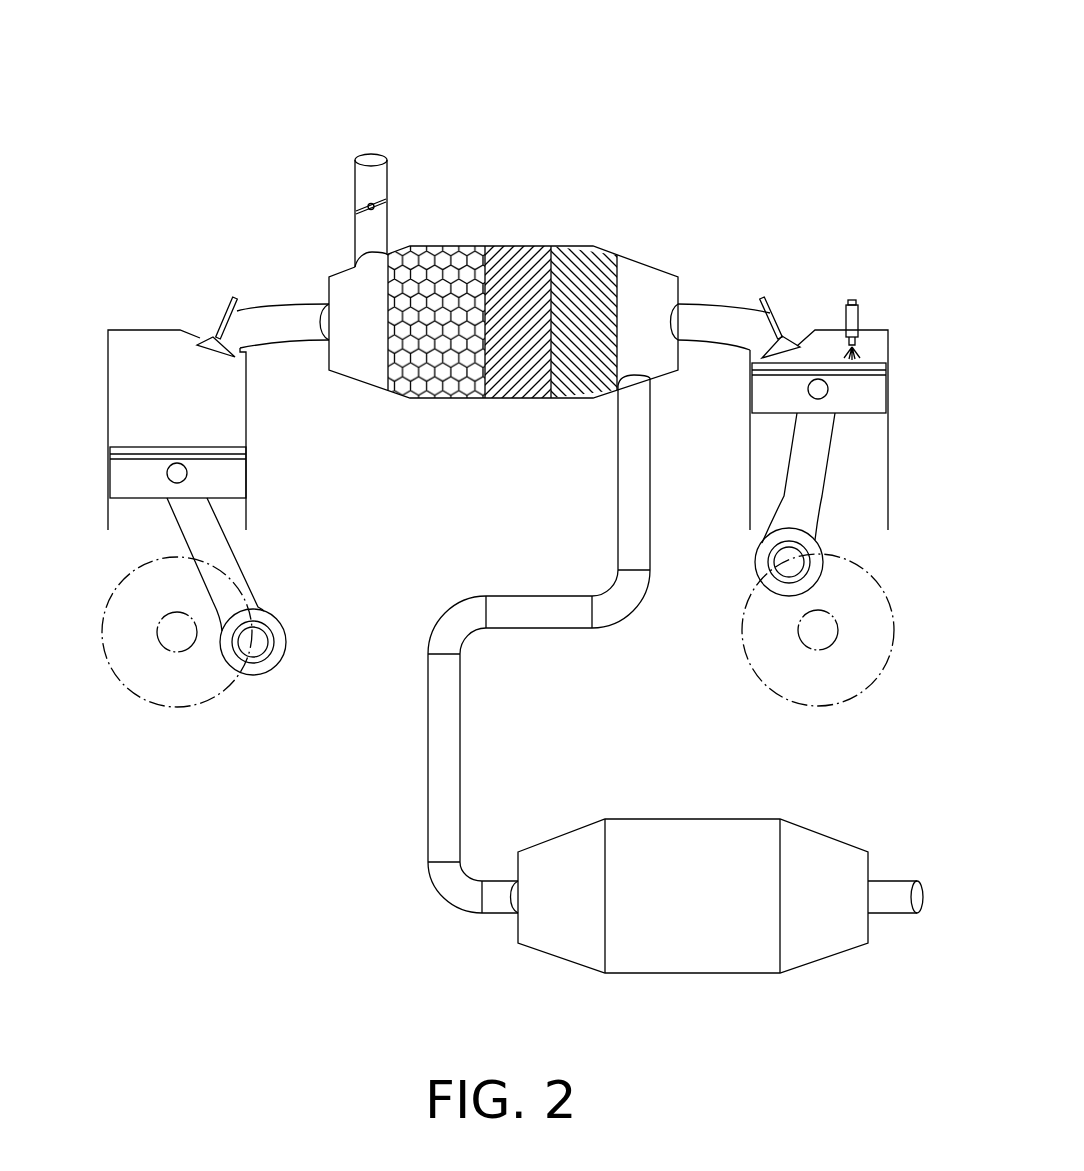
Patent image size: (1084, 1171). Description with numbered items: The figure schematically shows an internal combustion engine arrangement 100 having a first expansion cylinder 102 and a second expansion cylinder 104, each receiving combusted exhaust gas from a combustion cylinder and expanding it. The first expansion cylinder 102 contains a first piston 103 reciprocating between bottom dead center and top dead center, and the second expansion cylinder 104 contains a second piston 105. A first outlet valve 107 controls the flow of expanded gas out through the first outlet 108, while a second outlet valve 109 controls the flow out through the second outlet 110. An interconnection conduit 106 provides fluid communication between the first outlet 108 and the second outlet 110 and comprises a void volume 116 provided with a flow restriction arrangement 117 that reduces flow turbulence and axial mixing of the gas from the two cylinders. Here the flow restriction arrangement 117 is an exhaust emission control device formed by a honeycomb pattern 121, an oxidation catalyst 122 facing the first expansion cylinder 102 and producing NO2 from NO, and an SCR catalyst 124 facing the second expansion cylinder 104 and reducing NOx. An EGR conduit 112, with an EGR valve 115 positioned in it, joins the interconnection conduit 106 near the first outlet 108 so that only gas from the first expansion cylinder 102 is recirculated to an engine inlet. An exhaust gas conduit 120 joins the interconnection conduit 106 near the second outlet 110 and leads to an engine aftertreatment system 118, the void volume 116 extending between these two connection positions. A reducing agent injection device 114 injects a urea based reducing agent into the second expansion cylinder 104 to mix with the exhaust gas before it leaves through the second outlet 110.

The internal combustion engine arrangement 100 is at (298, 78).
The first expansion cylinder 102 is at (90, 355).
The first piston 103 is at (135, 480).
The second expansion cylinder 104 is at (909, 353).
The second piston 105 is at (858, 394).
The interconnection conduit 106 is at (390, 424).
The first outlet valve 107 is at (208, 335).
The first outlet 108 is at (200, 338).
The second outlet valve 109 is at (767, 318).
The second outlet 110 is at (787, 337).
The exhaust gas recirculation (EGR) conduit 112 is at (370, 182).
The reducing agent injection device 114 is at (858, 325).
The EGR valve 115 is at (368, 206).
The void volume 116 is at (511, 350).
The flow restriction arrangement 117 is at (572, 144).
The engine aftertreatment system 118 is at (697, 915).
The exhaust gas conduit 120 is at (537, 608).
The honeycomb pattern 121 is at (418, 287).
The oxidation catalyst 122 is at (505, 283).
The selective catalytic reduction (SCR) catalyst 124 is at (578, 280).